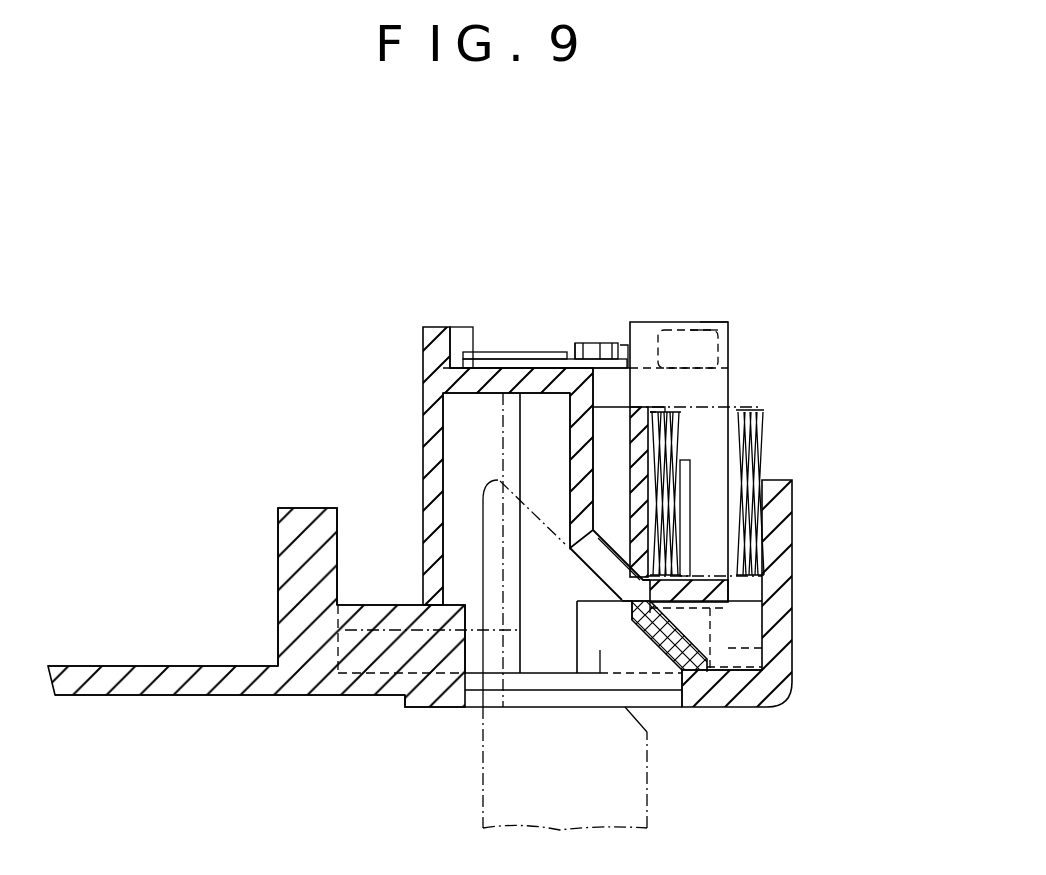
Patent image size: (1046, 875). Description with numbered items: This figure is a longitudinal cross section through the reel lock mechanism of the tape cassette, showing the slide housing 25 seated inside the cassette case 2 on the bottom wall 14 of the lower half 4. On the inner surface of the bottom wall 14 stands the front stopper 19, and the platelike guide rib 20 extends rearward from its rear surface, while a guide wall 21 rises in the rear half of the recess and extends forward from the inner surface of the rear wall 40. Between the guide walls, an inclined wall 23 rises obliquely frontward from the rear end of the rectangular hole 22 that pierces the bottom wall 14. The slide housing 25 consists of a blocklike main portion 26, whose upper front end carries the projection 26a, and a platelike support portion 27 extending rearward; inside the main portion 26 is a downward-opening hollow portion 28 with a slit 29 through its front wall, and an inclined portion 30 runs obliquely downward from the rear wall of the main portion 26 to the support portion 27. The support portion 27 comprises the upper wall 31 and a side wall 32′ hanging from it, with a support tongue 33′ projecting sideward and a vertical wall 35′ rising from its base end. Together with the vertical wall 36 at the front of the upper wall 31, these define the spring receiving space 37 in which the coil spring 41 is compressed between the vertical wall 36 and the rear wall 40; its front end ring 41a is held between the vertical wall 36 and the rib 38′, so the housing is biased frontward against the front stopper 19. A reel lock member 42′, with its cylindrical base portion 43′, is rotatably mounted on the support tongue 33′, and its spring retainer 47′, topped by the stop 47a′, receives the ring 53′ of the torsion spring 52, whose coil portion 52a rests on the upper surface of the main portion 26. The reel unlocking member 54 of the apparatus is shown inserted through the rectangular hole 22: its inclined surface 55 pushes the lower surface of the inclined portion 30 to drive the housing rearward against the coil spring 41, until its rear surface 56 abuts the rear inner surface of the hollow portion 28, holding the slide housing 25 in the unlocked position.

The cassette case 2 is at (93, 695).
The lower half 4 is at (160, 695).
The bottom wall 14 is at (145, 672).
The front stopper 19 is at (282, 535).
The guide rib 20 is at (372, 603).
The guide wall 21 is at (618, 655).
The rectangular hole 22 is at (470, 690).
The inclined wall 23 is at (646, 655).
The slide housing 25 is at (423, 345).
The main portion 26 is at (425, 397).
The projection 26a is at (436, 327).
The support portion 27 is at (750, 590).
The hollow portion 28 is at (447, 465).
The slit 29 is at (424, 612).
The inclined portion 30 is at (592, 578).
The upper wall 31 is at (684, 660).
The side wall 32′ is at (762, 638).
The support tongue 33′ is at (725, 672).
The vertical wall 35′ is at (723, 323).
The vertical wall 36 is at (593, 428).
The spring receiving space 37 is at (720, 504).
The rib 38′ is at (658, 405).
The rear wall 40 is at (786, 531).
The coil spring 41 is at (764, 416).
The front end ring 41a is at (650, 405).
The reel lock member 42′ is at (720, 346).
The base portion 43′ is at (705, 322).
The spring retainer 47′ is at (592, 343).
The stop 47a′ is at (580, 343).
The torsion spring 52 is at (520, 358).
The coil portion 52a is at (483, 352).
The ring 53′ is at (610, 350).
The reel unlocking member 54 is at (483, 795).
The inclined surface 55 is at (548, 493).
The rear surface 56 is at (600, 650).